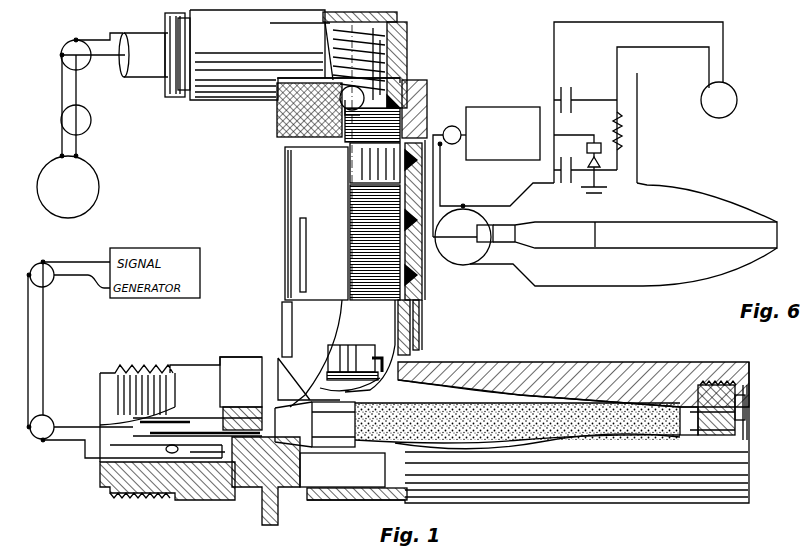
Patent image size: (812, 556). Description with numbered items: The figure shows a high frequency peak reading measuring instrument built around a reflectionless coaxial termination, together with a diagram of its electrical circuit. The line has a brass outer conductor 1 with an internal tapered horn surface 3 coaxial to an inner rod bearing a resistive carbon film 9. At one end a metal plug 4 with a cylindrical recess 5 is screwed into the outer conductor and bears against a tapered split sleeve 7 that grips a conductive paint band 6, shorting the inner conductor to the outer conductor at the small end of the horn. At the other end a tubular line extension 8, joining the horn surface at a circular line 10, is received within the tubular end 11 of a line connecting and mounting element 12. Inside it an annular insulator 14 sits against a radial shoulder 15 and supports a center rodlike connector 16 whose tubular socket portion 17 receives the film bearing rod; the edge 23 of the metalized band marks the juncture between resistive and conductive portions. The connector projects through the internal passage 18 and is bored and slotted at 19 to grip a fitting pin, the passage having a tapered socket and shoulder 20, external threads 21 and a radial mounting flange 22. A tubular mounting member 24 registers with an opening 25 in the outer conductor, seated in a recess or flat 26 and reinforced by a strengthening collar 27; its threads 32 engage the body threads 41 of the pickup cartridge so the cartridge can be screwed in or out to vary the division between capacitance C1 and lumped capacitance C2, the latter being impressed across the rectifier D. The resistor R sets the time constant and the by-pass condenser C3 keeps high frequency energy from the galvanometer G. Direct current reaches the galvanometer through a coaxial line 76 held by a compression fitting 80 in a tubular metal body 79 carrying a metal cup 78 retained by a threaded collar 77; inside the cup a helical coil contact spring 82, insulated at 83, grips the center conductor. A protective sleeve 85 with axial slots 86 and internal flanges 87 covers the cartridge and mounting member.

In FIG. 1, the outer conductor 1 is at (540, 363).
In FIG. 1, the tapered horn surface 3 is at (478, 372).
In FIG. 6, the tapered horn surface 3 is at (672, 208).
In FIG. 1, the metal plug 4 is at (752, 404).
In FIG. 1, the cylindrical recess 5 is at (712, 405).
In FIG. 1, the conductive paint band 6 is at (748, 420).
In FIG. 1, the tapered split sleeve 7 is at (686, 400).
In FIG. 1, the tubular line extension 8 is at (375, 473).
In FIG. 1, the resistive carbon film 9 is at (556, 420).
In FIG. 6, the resistive carbon film 9 is at (660, 245).
In FIG. 1, the circular line 10 is at (397, 400).
In FIG. 1, the tubular end 11 is at (322, 500).
In FIG. 1, the line connecting and mounting element 12 is at (200, 488).
In FIG. 6, the line connecting and mounting element 12 is at (489, 206).
In FIG. 1, the annular insulator 14 is at (250, 460).
In FIG. 1, the radial shoulder 15 is at (200, 458).
In FIG. 1, the center rodlike connector 16 is at (245, 418).
In FIG. 6, the center rodlike connector 16 is at (507, 237).
In FIG. 1, the tubular socket portion 17 is at (338, 426).
In FIG. 1, the internal chamber or passage 18 is at (165, 450).
In FIG. 1, the bored and slotted end 19 is at (185, 428).
In FIG. 1, the tapered socket and shoulder 20 is at (178, 458).
In FIG. 1, the external threads 21 is at (138, 364).
In FIG. 1, the radial mounting flange 22 is at (278, 520).
In FIG. 1, the edge of metalized paint band 23 is at (384, 425).
In FIG. 1, the tubular mounting member 24 is at (422, 305).
In FIG. 1, the opening 25 is at (425, 385).
In FIG. 1, the recess or flat 26 is at (420, 323).
In FIG. 1, the strengthening collar 27 is at (321, 342).
In FIG. 1, the threads 32 is at (408, 272).
In FIG. 1, the body threads 41 is at (350, 240).
In FIG. 1, the coaxial line 76 is at (148, 72).
In FIG. 1, the internally threaded collar 77 is at (427, 90).
In FIG. 1, the metal cup 78 is at (397, 18).
In FIG. 1, the tubular metal body 79 is at (218, 100).
In FIG. 1, the compression fitting 80 is at (168, 97).
In FIG. 1, the helical coil contact spring 82 is at (407, 66).
In FIG. 1, the insulation 83 is at (407, 50).
In FIG. 1, the protective sleeve 85 is at (333, 188).
In FIG. 1, the axial slots 86 is at (300, 252).
In FIG. 1, the internal flanges 87 is at (410, 291).
In FIG. 6, the capacitance C1 is at (594, 198).
In FIG. 6, the lumped capacitance C2 is at (565, 177).
In FIG. 6, the by-pass condenser C3 is at (569, 87).
In FIG. 6, the resistor R is at (620, 126).
In FIG. 6, the rectifier unit D is at (600, 163).
In FIG. 6, the galvanometer G is at (719, 100).